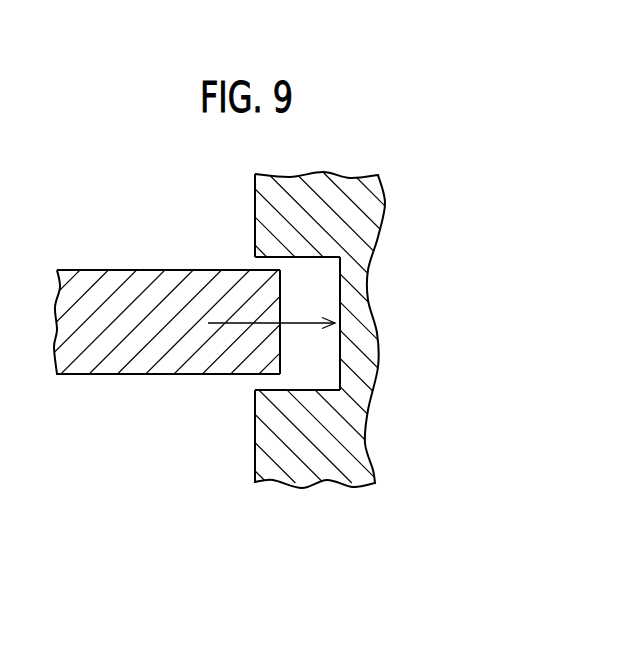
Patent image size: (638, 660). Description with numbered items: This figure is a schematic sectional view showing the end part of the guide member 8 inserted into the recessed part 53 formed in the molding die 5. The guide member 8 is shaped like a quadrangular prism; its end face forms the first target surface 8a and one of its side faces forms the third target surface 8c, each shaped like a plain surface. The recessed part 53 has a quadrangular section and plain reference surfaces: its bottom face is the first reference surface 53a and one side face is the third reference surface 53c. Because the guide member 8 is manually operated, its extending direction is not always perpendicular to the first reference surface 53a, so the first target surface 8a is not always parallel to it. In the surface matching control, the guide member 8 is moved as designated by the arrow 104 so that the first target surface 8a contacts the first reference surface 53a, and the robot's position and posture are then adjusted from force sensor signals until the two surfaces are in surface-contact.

The molding die 5 is at (357, 445).
The guide member 8 is at (88, 278).
The first target surface 8a is at (282, 364).
The third target surface 8c is at (227, 270).
The recessed part 53 is at (312, 393).
The first reference surface 53a is at (340, 292).
The third reference surface 53c is at (312, 257).
The arrow 104 is at (235, 325).